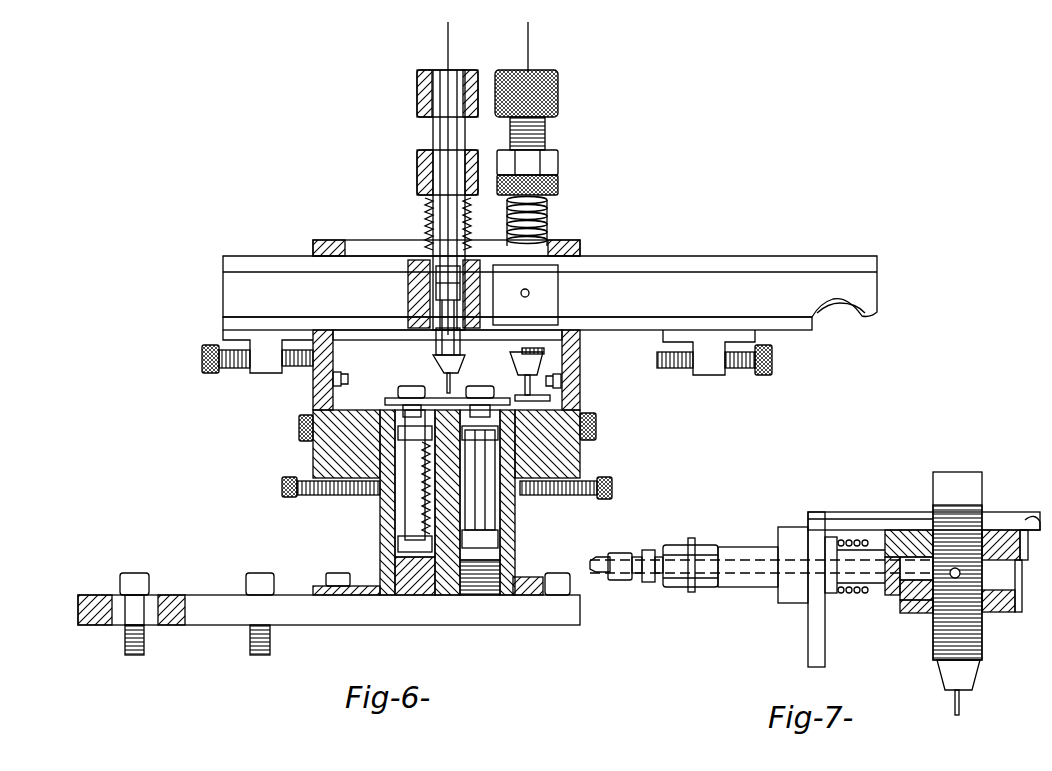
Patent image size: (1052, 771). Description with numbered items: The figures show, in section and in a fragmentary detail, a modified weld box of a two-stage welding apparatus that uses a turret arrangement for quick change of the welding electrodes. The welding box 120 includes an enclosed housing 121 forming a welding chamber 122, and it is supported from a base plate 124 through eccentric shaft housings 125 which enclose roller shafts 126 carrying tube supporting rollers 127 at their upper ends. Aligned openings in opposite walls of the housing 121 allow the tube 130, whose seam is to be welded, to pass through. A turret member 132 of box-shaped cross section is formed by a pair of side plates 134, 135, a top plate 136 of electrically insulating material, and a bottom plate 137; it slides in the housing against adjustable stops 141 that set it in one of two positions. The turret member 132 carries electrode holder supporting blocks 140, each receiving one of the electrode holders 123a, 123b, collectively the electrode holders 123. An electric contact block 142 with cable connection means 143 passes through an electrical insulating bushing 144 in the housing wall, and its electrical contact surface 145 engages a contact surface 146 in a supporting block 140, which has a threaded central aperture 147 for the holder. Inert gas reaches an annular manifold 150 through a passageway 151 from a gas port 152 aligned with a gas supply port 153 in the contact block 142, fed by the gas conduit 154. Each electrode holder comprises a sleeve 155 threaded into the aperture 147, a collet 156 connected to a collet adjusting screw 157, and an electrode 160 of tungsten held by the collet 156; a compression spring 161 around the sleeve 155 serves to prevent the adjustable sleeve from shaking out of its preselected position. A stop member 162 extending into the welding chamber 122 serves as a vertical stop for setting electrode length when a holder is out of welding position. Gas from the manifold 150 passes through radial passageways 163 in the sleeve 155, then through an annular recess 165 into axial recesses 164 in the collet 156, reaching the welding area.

In FIG. 6, the welding box 120 is at (305, 404).
In FIG. 6, the enclosed housing 121 is at (322, 335).
In FIG. 6, the welding chamber 122 is at (332, 420).
In FIG. 7, the electrode holders 123 is at (960, 470).
In FIG. 6, the electrode holder 123a is at (408, 97).
In FIG. 6, the electrode holder 123b is at (570, 97).
In FIG. 6, the base plate 124 is at (228, 594).
In FIG. 6, the eccentric shaft housings 125 is at (394, 546).
In FIG. 6, the roller shafts 126 is at (397, 520).
In FIG. 6, the tube supporting rollers 127 is at (345, 440).
In FIG. 6, the tube 130 is at (418, 470).
In FIG. 6, the turret member 132 is at (667, 242).
In FIG. 6, the side plate 134 is at (863, 283).
In FIG. 7, the side plate 134 is at (906, 532).
In FIG. 7, the side plate 135 is at (1028, 532).
In FIG. 7, the top plate 136 is at (990, 528).
In FIG. 6, the bottom plate 137 is at (812, 332).
In FIG. 7, the bottom plate 137 is at (1018, 612).
In FIG. 6, the electrode holder supporting blocks 140 is at (417, 258).
In FIG. 7, the electrode holder supporting blocks 140 is at (1022, 582).
In FIG. 6, the adjustable stops 141 is at (205, 352).
In FIG. 7, the electric contact block 142 is at (740, 590).
In FIG. 7, the cable connection means 143 is at (690, 585).
In FIG. 7, the electrical insulating bushing 144 is at (792, 606).
In FIG. 7, the electrical contact surface 145 is at (905, 600).
In FIG. 7, the electrical contact surface 146 is at (885, 592).
In FIG. 7, the threaded central aperture 147 is at (985, 600).
In FIG. 6, the annular manifold 150 is at (410, 290).
In FIG. 7, the annular manifold 150 is at (920, 616).
In FIG. 7, the passageway 151 is at (915, 602).
In FIG. 6, the gas port 152 is at (529, 293).
In FIG. 7, the gas port 152 is at (893, 560).
In FIG. 7, the gas supply port 153 is at (878, 552).
In FIG. 7, the gas conduit 154 is at (600, 552).
In FIG. 6, the sleeve 155 is at (432, 136).
In FIG. 6, the collet 156 is at (425, 335).
In FIG. 6, the collet adjusting screw 157 is at (420, 84).
In FIG. 6, the electrode 160 is at (446, 42).
In FIG. 6, the spring 161 is at (425, 222).
In FIG. 6, the stop member 162 is at (332, 378).
In FIG. 6, the radial passageways 163 is at (412, 310).
In FIG. 6, the axial recesses 164 is at (440, 392).
In FIG. 6, the annular recess 165 is at (460, 352).